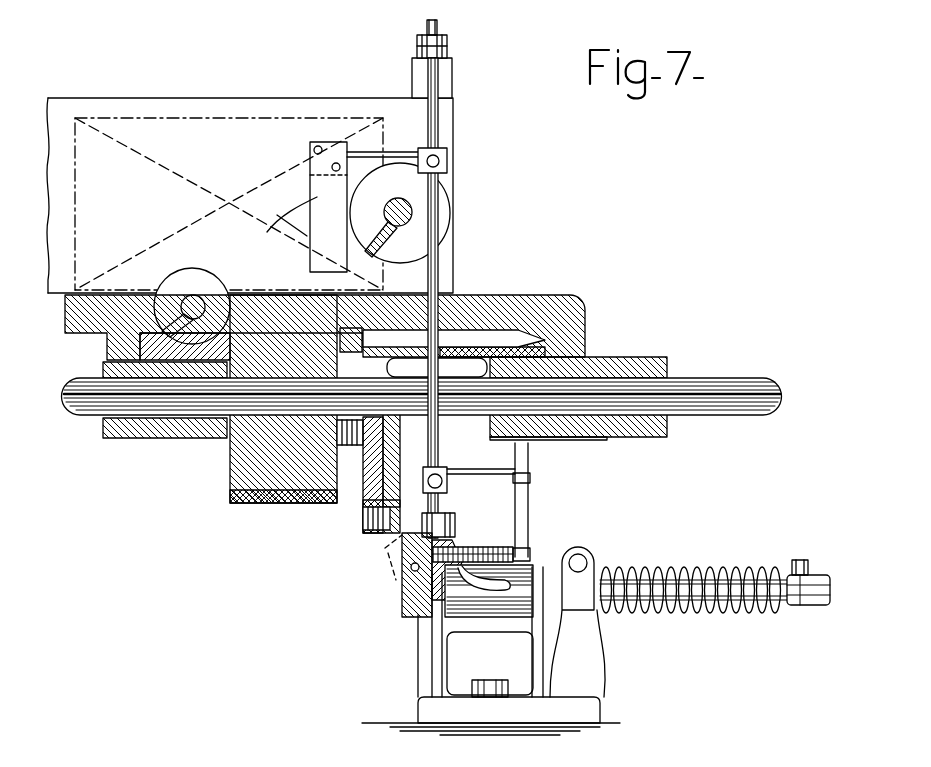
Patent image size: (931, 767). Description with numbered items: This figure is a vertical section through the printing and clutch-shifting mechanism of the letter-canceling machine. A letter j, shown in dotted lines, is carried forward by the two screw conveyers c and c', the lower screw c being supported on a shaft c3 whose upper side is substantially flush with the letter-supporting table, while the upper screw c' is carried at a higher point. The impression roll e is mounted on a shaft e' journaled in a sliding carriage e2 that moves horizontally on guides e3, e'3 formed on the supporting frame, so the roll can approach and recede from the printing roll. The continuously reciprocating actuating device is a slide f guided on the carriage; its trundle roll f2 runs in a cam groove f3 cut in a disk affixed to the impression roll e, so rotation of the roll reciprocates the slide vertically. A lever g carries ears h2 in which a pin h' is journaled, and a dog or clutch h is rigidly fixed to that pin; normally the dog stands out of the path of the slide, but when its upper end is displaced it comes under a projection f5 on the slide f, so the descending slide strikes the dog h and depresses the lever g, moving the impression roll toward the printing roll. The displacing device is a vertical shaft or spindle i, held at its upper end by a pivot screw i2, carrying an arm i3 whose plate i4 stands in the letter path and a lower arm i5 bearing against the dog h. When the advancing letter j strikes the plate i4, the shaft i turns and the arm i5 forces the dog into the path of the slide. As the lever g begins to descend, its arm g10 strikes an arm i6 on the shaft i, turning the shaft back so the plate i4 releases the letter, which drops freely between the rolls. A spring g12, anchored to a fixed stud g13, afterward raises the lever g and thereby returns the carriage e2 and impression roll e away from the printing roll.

The letter j is at (262, 132).
The vertical shaft or spindle i is at (438, 272).
The pivot screw i2 is at (439, 68).
The arm i3 is at (362, 153).
The plate i4 is at (289, 224).
The arm i5 is at (450, 528).
The arm i6 is at (462, 473).
The screw conveyer c is at (192, 295).
The screw conveyer c' is at (430, 213).
The shaft c3 is at (198, 299).
The impression roll e is at (336, 411).
The shaft e' is at (422, 385).
The sliding carriage or carrier e2 is at (462, 357).
The guide e3 is at (106, 349).
The guide e'3 is at (533, 343).
The slide f is at (367, 507).
The trundle roll f2 is at (333, 470).
The cam groove f3 is at (350, 340).
The projection f5 is at (390, 521).
The lever g is at (450, 607).
The arm g10 is at (529, 460).
The spring g12 is at (667, 570).
The fixed stud g13 is at (817, 578).
The dog or clutch h is at (392, 575).
The pin h' is at (417, 584).
The ears h2 is at (403, 568).